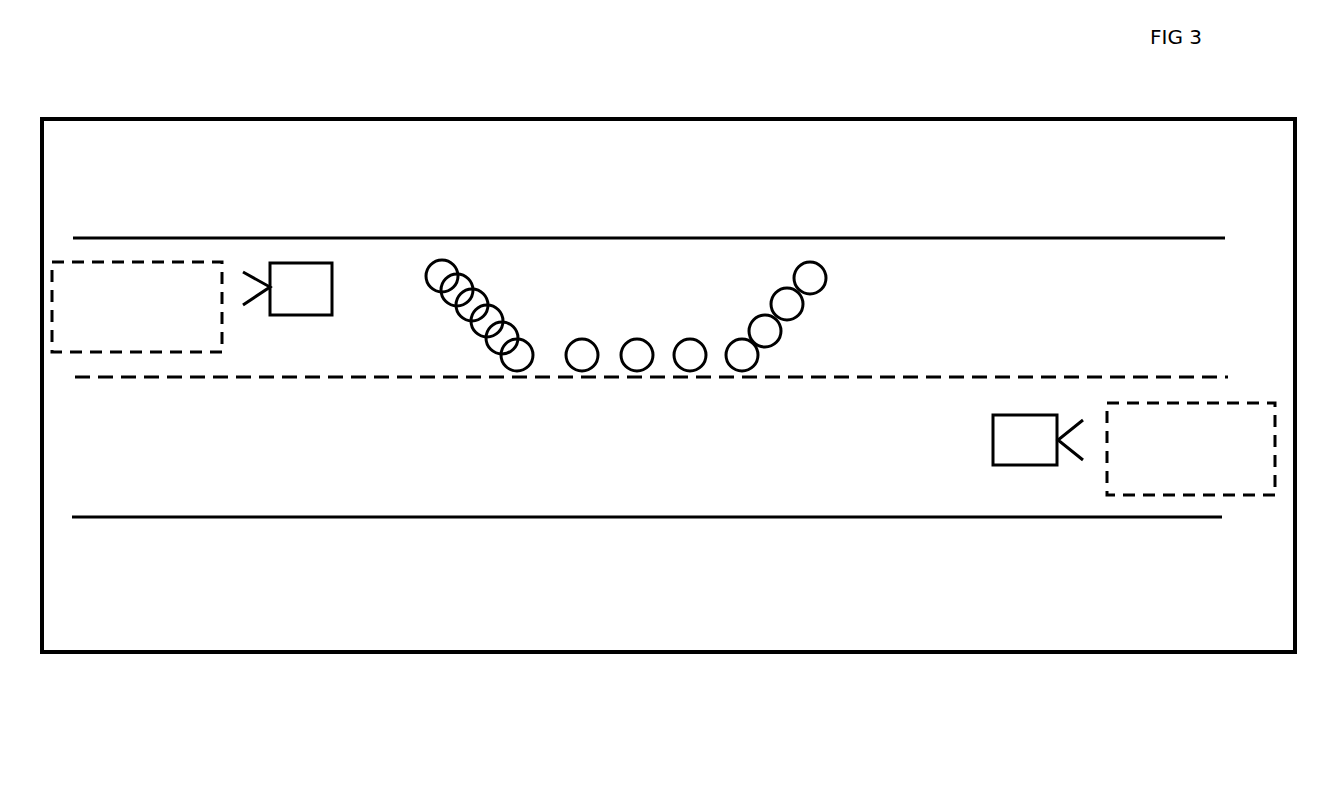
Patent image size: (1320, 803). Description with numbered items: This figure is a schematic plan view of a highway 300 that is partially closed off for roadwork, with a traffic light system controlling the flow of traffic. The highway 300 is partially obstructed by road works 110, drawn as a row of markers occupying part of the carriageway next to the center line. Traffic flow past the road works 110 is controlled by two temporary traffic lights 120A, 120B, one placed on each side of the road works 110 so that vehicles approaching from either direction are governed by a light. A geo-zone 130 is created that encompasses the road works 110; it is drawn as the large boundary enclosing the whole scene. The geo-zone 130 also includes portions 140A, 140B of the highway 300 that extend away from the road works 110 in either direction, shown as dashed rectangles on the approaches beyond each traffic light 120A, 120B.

The road works 110 is at (626, 315).
The temporary traffic light 120A is at (310, 258).
The temporary traffic light 120B is at (1030, 477).
The geo-zone 130 is at (512, 620).
The portion of the highway 140A is at (137, 247).
The portion of the highway 140B is at (1193, 495).
The highway 300 is at (415, 490).